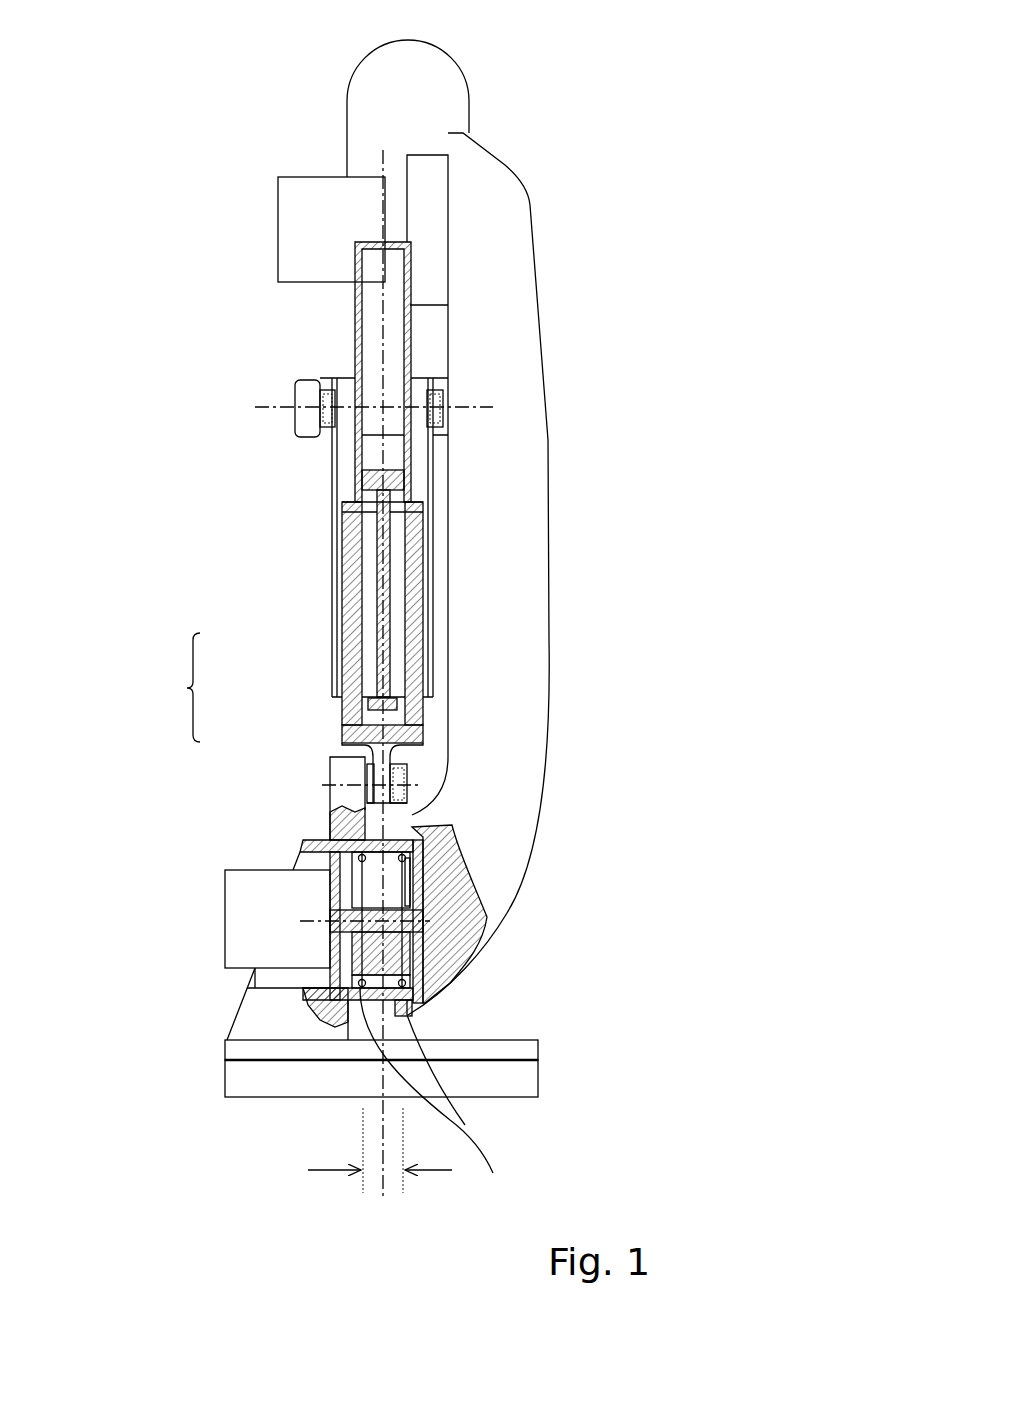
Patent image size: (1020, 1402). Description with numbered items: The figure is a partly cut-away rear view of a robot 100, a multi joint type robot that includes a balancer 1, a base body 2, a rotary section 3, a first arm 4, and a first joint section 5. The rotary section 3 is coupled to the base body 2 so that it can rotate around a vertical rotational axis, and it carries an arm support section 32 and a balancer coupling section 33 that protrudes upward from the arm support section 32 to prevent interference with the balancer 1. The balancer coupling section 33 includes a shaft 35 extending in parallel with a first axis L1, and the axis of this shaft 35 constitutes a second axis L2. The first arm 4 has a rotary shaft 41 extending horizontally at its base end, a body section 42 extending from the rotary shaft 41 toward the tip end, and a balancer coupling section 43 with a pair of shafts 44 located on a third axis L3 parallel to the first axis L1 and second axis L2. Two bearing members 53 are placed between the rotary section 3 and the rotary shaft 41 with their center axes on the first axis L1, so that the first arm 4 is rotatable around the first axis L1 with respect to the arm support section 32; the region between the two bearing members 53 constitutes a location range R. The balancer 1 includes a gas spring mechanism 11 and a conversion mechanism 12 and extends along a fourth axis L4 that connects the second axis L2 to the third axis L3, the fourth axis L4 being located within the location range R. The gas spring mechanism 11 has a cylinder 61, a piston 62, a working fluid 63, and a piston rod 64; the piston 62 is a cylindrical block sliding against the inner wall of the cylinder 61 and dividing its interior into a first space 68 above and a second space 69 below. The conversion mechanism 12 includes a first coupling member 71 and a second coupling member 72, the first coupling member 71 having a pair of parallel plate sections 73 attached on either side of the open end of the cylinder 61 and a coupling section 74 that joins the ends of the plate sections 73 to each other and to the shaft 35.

The robot 100 is at (601, 149).
The balancer 1 is at (331, 544).
The base body 2 is at (264, 1085).
The rotary section 3 is at (517, 1052).
The first arm 4 is at (546, 851).
The first joint section 5 is at (320, 826).
The gas spring mechanism 11 is at (414, 468).
The conversion mechanism 12 is at (177, 687).
The arm support section 32 is at (255, 1015).
The balancer coupling section 33 is at (343, 772).
The shaft 35 is at (410, 777).
The rotary shaft 41 is at (388, 953).
The body section 42 is at (548, 624).
The balancer coupling section 43 is at (305, 390).
The pair of shafts 44 is at (322, 388).
The bearing members 53 is at (433, 1094).
The cylinder 61 is at (408, 275).
The piston 62 is at (375, 482).
The working fluid 63 is at (373, 305).
The piston rod 64 is at (388, 632).
The first space 68 is at (390, 333).
The second space 69 is at (395, 500).
The first coupling member 71 is at (343, 716).
The second coupling member 72 is at (333, 662).
The plate sections 73 is at (345, 570).
The coupling section 74 is at (418, 738).
The first axis L1 is at (313, 919).
The second axis L2 is at (420, 785).
The third axis L3 is at (463, 406).
The fourth axis L4 is at (382, 1195).
The location range R is at (433, 1170).